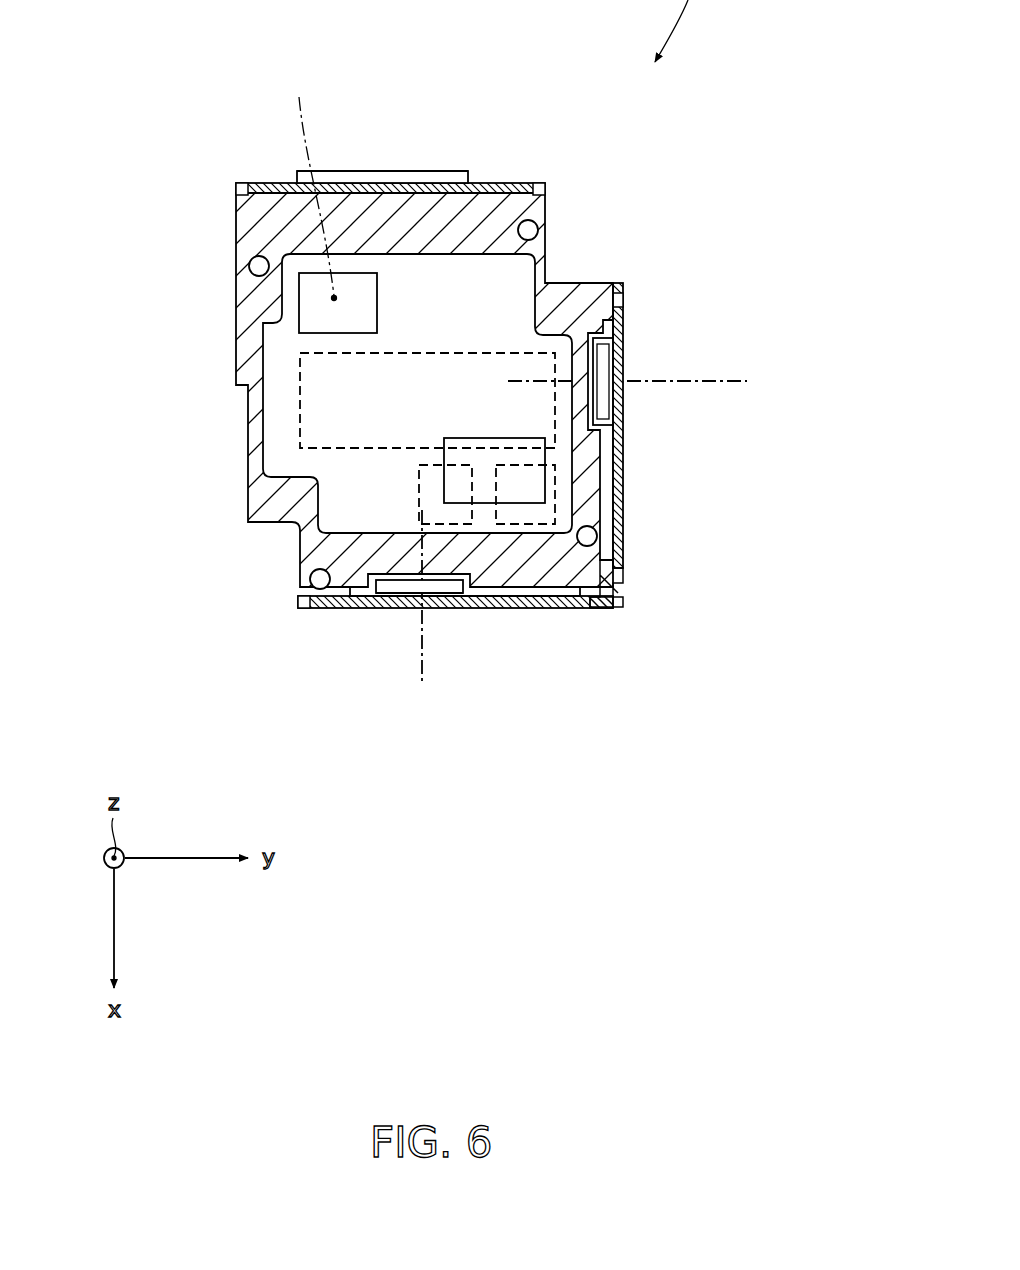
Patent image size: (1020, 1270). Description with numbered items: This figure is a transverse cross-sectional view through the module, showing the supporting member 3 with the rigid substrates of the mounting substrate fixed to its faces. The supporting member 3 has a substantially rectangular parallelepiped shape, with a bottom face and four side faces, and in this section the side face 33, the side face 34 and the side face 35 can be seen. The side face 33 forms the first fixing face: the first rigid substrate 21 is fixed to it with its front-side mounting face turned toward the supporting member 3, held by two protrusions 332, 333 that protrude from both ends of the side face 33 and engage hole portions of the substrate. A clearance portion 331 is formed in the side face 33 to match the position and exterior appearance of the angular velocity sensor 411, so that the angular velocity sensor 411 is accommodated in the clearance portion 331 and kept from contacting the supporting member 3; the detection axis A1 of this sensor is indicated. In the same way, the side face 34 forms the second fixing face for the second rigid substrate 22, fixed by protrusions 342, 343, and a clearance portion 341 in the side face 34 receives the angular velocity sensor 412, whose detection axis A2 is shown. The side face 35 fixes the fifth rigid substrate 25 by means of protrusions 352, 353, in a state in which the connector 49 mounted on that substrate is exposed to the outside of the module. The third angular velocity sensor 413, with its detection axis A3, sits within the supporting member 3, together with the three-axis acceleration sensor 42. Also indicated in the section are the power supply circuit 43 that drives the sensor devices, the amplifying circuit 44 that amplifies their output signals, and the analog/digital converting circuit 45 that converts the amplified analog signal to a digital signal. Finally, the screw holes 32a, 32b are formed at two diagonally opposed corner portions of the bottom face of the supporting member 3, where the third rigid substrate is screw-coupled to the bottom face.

The supporting member 3 is at (226, 322).
The side face 35 is at (490, 183).
The protrusion 352 is at (257, 183).
The protrusion 353 is at (539, 183).
The fifth rigid substrate 25 is at (357, 171).
The connector 49 is at (406, 171).
The screw hole 32a is at (250, 266).
The screw hole 32b is at (590, 536).
The angular velocity sensor 413 is at (320, 287).
The detection axis A3 is at (309, 186).
The analog/digital converting circuit 45 is at (333, 380).
The power supply circuit 43 is at (542, 510).
The amplifying circuit 44 is at (432, 497).
The acceleration sensor 42 is at (522, 484).
The detection axis A1 is at (422, 668).
The detection axis A2 is at (697, 381).
The side face 34 is at (623, 288).
The protrusion 342 is at (623, 298).
The clearance portion 341 is at (592, 357).
The angular velocity sensor 412 is at (605, 392).
The second rigid substrate 22 is at (623, 427).
The protrusion 343 is at (620, 577).
The side face 33 is at (342, 609).
The protrusion 333 is at (320, 609).
The protrusion 332 is at (598, 607).
The first rigid substrate 21 is at (488, 609).
The clearance portion 331 is at (402, 576).
The angular velocity sensor 411 is at (413, 592).